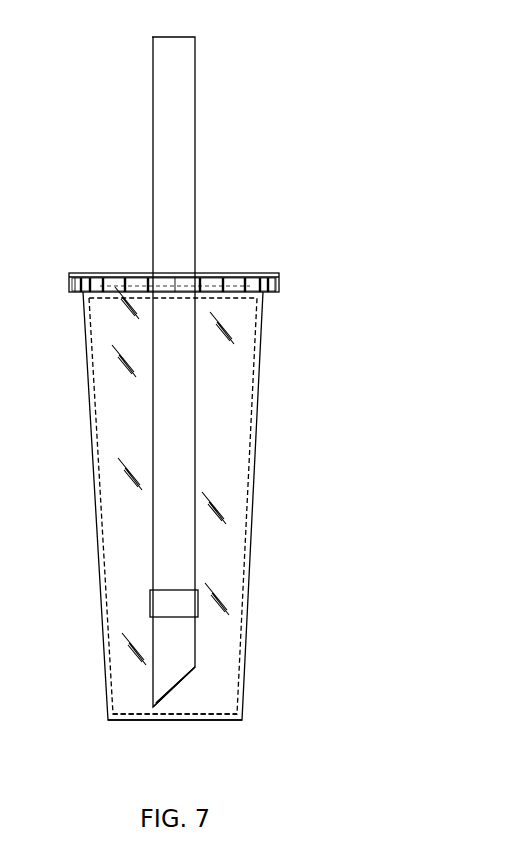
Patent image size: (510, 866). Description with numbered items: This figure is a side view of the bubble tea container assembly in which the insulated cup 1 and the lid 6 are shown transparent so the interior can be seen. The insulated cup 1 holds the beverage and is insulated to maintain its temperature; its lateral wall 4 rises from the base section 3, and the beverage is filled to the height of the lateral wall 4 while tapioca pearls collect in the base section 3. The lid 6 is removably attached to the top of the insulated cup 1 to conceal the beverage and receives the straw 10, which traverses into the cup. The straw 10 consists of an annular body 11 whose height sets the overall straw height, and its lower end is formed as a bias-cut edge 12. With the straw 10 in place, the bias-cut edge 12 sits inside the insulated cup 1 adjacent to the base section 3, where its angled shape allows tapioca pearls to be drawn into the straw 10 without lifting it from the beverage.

The insulated cup 1 is at (189, 470).
The base section 3 is at (120, 714).
The lateral wall 4 is at (103, 585).
The lid 6 is at (283, 289).
The straw 10 is at (172, 368).
The annular body 11 is at (152, 167).
The bias-cut edge 12 is at (170, 695).